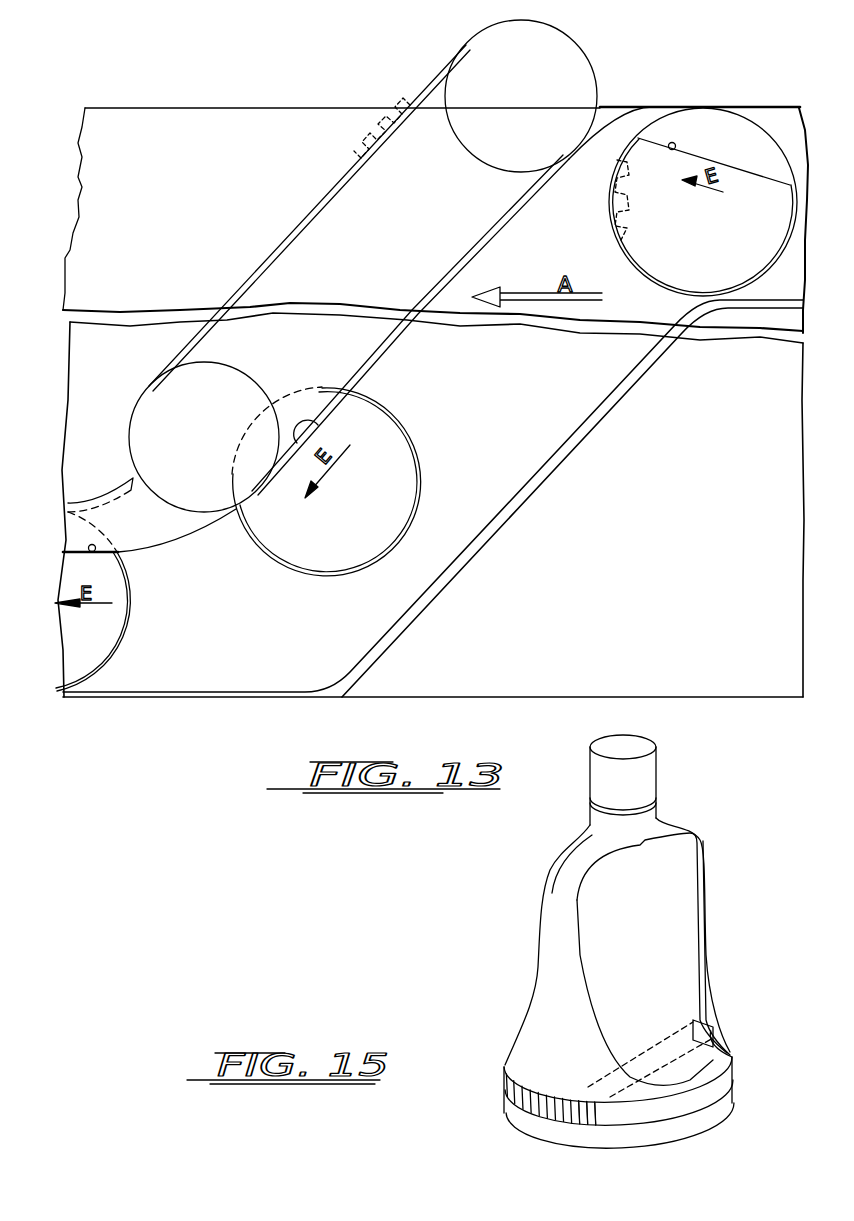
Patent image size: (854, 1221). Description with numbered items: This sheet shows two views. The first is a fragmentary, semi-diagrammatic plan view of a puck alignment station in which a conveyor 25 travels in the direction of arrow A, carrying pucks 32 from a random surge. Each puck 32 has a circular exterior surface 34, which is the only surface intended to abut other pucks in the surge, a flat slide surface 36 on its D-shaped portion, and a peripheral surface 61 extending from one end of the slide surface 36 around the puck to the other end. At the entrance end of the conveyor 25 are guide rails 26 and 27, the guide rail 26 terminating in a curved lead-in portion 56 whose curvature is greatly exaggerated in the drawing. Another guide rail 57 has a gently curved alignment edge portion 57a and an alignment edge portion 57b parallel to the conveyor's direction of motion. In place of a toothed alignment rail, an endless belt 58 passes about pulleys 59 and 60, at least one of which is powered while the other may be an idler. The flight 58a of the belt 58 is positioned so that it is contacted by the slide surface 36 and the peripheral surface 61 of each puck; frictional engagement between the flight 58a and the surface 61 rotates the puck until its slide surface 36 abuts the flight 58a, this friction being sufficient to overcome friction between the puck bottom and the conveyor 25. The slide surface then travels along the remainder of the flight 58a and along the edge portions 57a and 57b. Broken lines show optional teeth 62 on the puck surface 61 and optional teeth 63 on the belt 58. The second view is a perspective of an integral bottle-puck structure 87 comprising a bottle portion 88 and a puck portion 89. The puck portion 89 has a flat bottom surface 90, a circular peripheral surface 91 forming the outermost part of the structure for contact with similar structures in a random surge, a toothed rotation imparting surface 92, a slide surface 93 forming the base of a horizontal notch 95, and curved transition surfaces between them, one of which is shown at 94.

In FIG. 13, the conveyor 25 is at (780, 572).
In FIG. 13, the guide rail 26 is at (712, 105).
In FIG. 13, the guide rail 27 is at (740, 303).
In FIG. 13, the puck 32 is at (393, 417).
In FIG. 13, the circular exterior surface 34 is at (768, 136).
In FIG. 13, the slide surface 36 is at (672, 150).
In FIG. 13, the lead-in portion 56 is at (612, 112).
In FIG. 13, the guide rail 57 is at (125, 493).
In FIG. 13, the alignment edge portion 57a is at (200, 537).
In FIG. 13, the alignment edge portion 57b is at (82, 548).
In FIG. 13, the endless belt 58 is at (289, 241).
In FIG. 13, the flight 58a is at (476, 243).
In FIG. 13, the pulley 59 is at (552, 47).
In FIG. 13, the pulley 60 is at (238, 380).
In FIG. 13, the peripheral surface 61 is at (795, 215).
In FIG. 13, the teeth 62 is at (608, 192).
In FIG. 13, the teeth 63 is at (377, 118).
In FIG. 15, the integral bottle-puck structure 87 is at (700, 866).
In FIG. 15, the bottle portion 88 is at (708, 922).
In FIG. 15, the puck portion 89 is at (730, 1088).
In FIG. 15, the flat bottom surface 90 is at (600, 1147).
In FIG. 15, the circular peripheral surface 91 is at (700, 1122).
In FIG. 15, the toothed rotation imparting surface 92 is at (506, 1080).
In FIG. 15, the slide surface 93 is at (593, 1109).
In FIG. 15, the curved transition surface 94 is at (597, 1104).
In FIG. 15, the horizontal notch 95 is at (650, 1107).